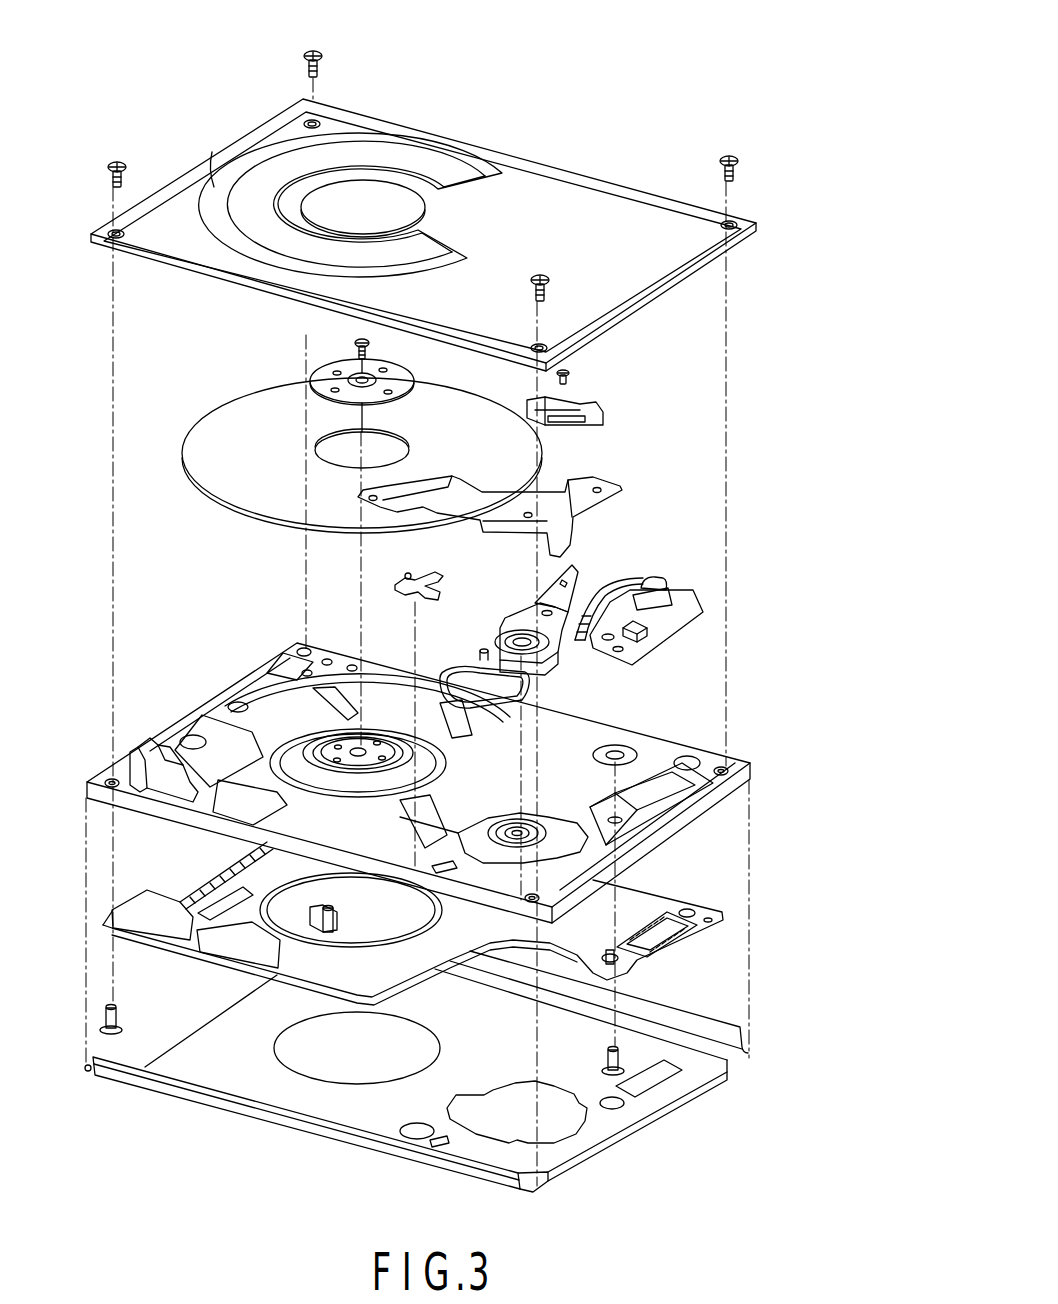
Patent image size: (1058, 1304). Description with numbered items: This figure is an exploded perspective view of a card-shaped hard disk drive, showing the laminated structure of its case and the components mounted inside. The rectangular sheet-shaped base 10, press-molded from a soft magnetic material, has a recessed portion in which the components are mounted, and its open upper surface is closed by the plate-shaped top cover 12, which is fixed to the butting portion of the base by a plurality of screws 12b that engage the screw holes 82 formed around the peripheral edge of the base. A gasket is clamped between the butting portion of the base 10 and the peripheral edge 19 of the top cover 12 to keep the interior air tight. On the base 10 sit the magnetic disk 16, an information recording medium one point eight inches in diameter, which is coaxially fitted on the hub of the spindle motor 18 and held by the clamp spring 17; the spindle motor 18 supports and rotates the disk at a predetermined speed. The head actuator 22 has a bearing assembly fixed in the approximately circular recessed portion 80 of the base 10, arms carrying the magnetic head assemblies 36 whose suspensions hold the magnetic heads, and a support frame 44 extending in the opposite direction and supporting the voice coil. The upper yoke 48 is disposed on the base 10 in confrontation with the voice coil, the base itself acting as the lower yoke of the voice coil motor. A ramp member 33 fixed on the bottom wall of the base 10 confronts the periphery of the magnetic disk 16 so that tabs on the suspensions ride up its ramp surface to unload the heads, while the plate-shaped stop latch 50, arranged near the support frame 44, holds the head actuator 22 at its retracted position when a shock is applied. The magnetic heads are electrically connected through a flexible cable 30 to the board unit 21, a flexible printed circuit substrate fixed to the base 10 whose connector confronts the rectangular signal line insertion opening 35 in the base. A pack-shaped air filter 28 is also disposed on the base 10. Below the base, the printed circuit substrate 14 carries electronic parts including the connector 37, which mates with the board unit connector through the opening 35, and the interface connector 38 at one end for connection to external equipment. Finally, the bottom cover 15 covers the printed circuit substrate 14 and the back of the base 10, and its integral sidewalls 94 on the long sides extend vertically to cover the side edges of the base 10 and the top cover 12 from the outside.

The base 10 is at (242, 687).
The top cover 12 is at (544, 180).
The screws 12b is at (312, 49).
The printed circuit substrate 14 is at (248, 965).
The bottom cover 15 is at (300, 1103).
The magnetic disk 16 is at (207, 423).
The clamp spring 17 is at (312, 375).
The spindle motor 18 is at (399, 756).
The peripheral edge 19 is at (189, 266).
The board unit 21 is at (673, 630).
The head actuator 22 is at (497, 622).
The air filter 28 is at (152, 762).
The flexible cable 30 is at (633, 582).
The ramp member 33 is at (580, 403).
The signal line insertion opening 35 is at (660, 803).
The magnetic head assemblies 36 is at (600, 557).
The connector 37 is at (675, 935).
The interface connector 38 is at (173, 888).
The support frame 44 is at (452, 673).
The upper yoke 48 is at (482, 490).
The stop latch 50 is at (433, 573).
The recessed portion 80 is at (550, 826).
The screw holes 82 is at (302, 648).
The sidewalls 94 is at (203, 1098).